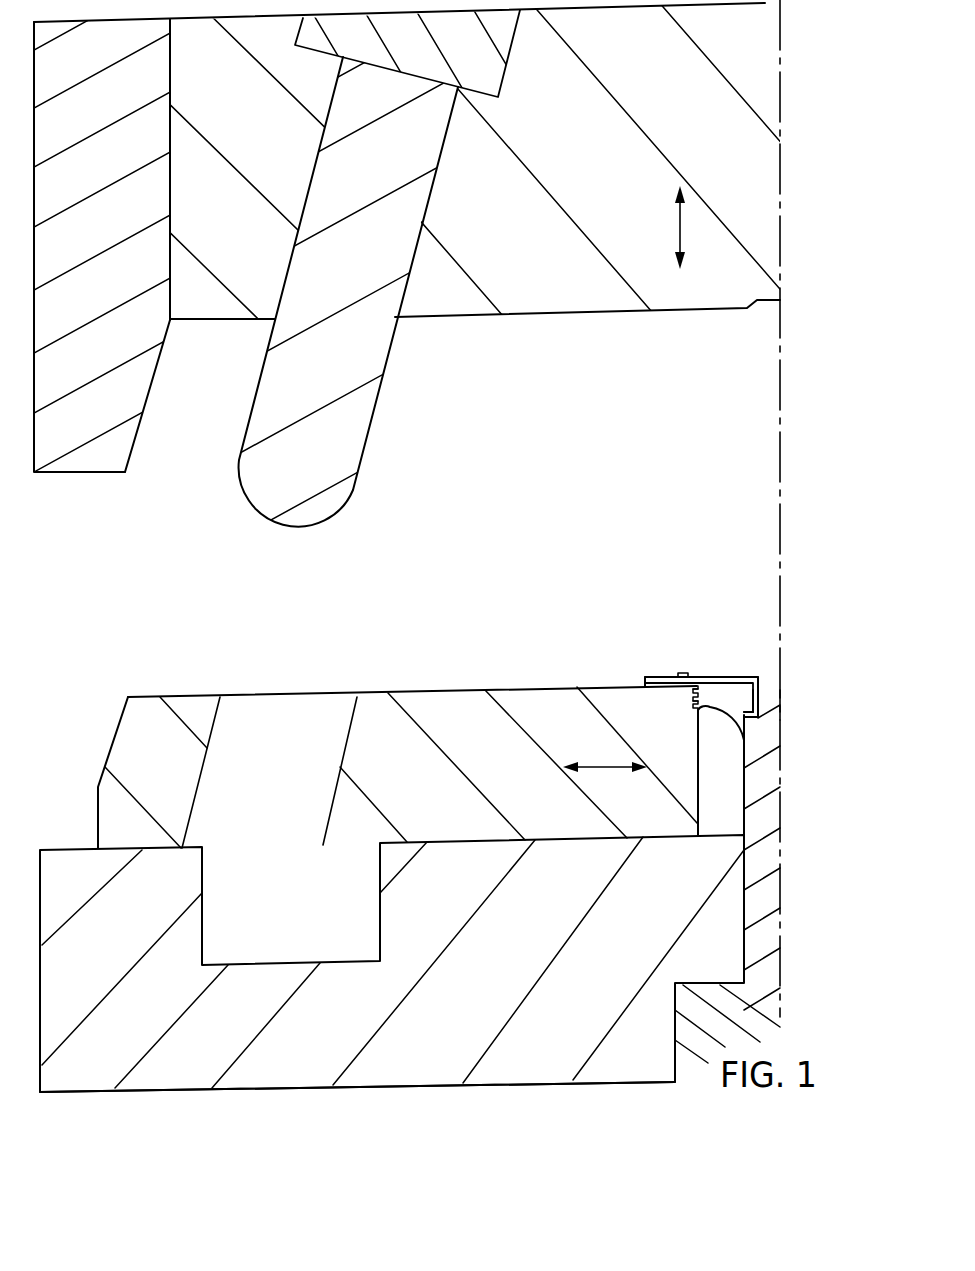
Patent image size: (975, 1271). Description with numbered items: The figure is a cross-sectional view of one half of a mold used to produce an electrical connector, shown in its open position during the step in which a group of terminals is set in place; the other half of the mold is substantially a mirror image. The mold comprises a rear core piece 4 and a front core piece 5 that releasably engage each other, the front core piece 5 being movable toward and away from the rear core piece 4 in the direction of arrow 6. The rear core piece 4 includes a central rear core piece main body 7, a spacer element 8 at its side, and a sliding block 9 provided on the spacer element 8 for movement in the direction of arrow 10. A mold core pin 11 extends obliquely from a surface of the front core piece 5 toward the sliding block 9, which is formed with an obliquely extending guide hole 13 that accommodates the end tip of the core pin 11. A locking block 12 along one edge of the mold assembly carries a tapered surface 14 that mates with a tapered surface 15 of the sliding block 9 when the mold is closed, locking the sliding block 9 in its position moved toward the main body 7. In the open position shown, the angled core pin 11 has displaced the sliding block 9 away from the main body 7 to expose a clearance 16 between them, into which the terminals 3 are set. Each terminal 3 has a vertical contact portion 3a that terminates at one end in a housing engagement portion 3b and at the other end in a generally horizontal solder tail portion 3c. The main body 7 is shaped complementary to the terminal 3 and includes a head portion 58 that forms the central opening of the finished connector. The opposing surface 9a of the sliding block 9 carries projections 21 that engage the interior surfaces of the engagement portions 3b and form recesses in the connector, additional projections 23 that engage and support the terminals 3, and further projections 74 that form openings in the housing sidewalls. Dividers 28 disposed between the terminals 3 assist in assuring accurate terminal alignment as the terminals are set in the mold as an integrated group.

The terminal 3 is at (733, 700).
The contact portion 3a is at (762, 695).
The housing engagement portion 3b is at (747, 723).
The solder tail portion 3c is at (675, 674).
The rear core piece 4 is at (800, 850).
The front core piece 5 is at (798, 153).
The arrow 6 is at (682, 237).
The rear core piece main body 7 is at (763, 942).
The spacer element 8 is at (503, 1060).
The sliding block 9 is at (510, 838).
The opposing surface 9a is at (700, 787).
The arrow 10 is at (602, 763).
The mold core pin 11 is at (330, 463).
The locking block 12 is at (90, 452).
The guide hole 13 is at (303, 712).
The tapered surface 14 is at (143, 418).
The tapered surface 15 is at (113, 740).
The clearance 16 is at (763, 683).
The projection 21 is at (697, 708).
The projection 23 is at (694, 700).
The divider 28 is at (687, 675).
The head portion 58 is at (778, 705).
The projection 74 is at (692, 690).